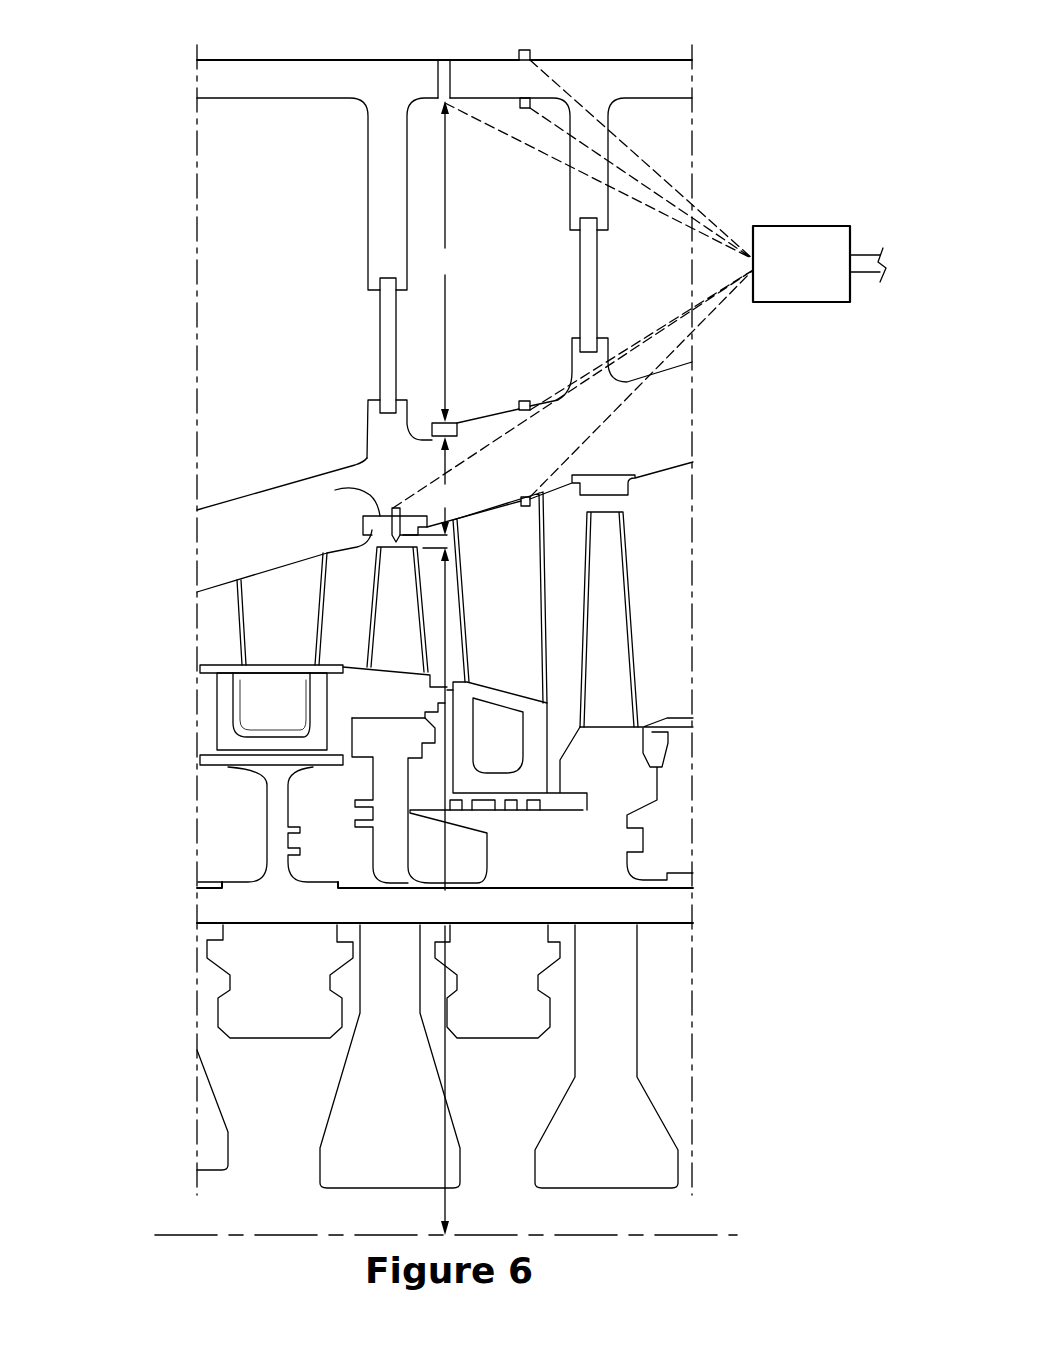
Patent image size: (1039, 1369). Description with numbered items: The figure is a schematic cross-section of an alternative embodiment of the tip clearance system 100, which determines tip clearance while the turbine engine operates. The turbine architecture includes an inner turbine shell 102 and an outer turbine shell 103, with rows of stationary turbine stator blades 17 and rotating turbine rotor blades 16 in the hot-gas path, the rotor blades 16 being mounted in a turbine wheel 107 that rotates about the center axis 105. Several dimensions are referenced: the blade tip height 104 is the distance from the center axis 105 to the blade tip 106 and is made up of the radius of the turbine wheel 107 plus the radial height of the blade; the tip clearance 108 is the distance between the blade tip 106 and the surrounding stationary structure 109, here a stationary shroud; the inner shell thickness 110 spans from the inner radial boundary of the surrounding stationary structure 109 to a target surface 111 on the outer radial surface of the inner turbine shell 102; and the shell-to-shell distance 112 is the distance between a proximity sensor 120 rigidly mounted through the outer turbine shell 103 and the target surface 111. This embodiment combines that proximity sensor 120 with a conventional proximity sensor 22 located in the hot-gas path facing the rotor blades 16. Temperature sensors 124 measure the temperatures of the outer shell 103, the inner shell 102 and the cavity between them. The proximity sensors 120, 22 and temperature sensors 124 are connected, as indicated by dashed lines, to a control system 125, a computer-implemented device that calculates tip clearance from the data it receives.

The tip clearance system 100 is at (160, 60).
The outer turbine shell 103 is at (236, 91).
The proximity sensor 120 is at (453, 80).
The temperature sensor 124 is at (530, 52).
The control system 125 is at (773, 277).
The shell-to-shell distance 112 is at (445, 261).
The target surface 111 is at (447, 423).
The inner turbine shell 102 is at (638, 443).
The surrounding stationary structure 109 is at (335, 490).
The proximity sensor 22 is at (393, 508).
The inner shell thickness 110 is at (457, 486).
The tip clearance 108 is at (443, 543).
The blade tip 106 is at (380, 553).
The turbine stator blade 17 is at (261, 636).
The turbine rotor blade 16 is at (381, 645).
The blade tip height 104 is at (445, 891).
The turbine wheel 107 is at (366, 1135).
The center axis 105 is at (702, 1235).